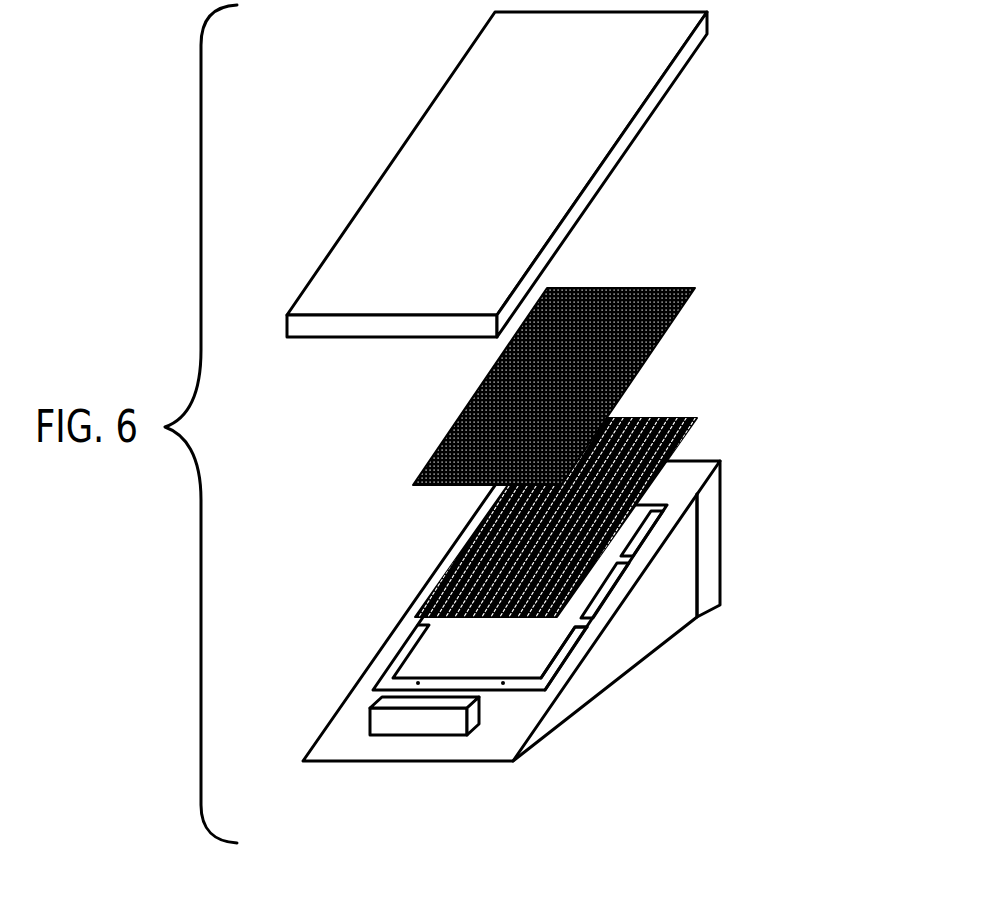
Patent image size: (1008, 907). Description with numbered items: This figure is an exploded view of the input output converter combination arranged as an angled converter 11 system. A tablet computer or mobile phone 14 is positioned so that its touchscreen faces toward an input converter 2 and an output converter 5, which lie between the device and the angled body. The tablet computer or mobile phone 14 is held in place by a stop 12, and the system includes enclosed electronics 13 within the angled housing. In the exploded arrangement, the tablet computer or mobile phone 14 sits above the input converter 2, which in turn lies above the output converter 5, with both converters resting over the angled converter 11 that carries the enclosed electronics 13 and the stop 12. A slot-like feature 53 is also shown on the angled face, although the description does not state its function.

The tablet computer or mobile phone 14 is at (565, 126).
The input converter 2 is at (697, 333).
The output converter 5 is at (720, 414).
The enclosed electronics 13 is at (740, 492).
The angled converter 11 is at (712, 627).
The stop 12 is at (370, 742).
The slot 53 is at (600, 673).